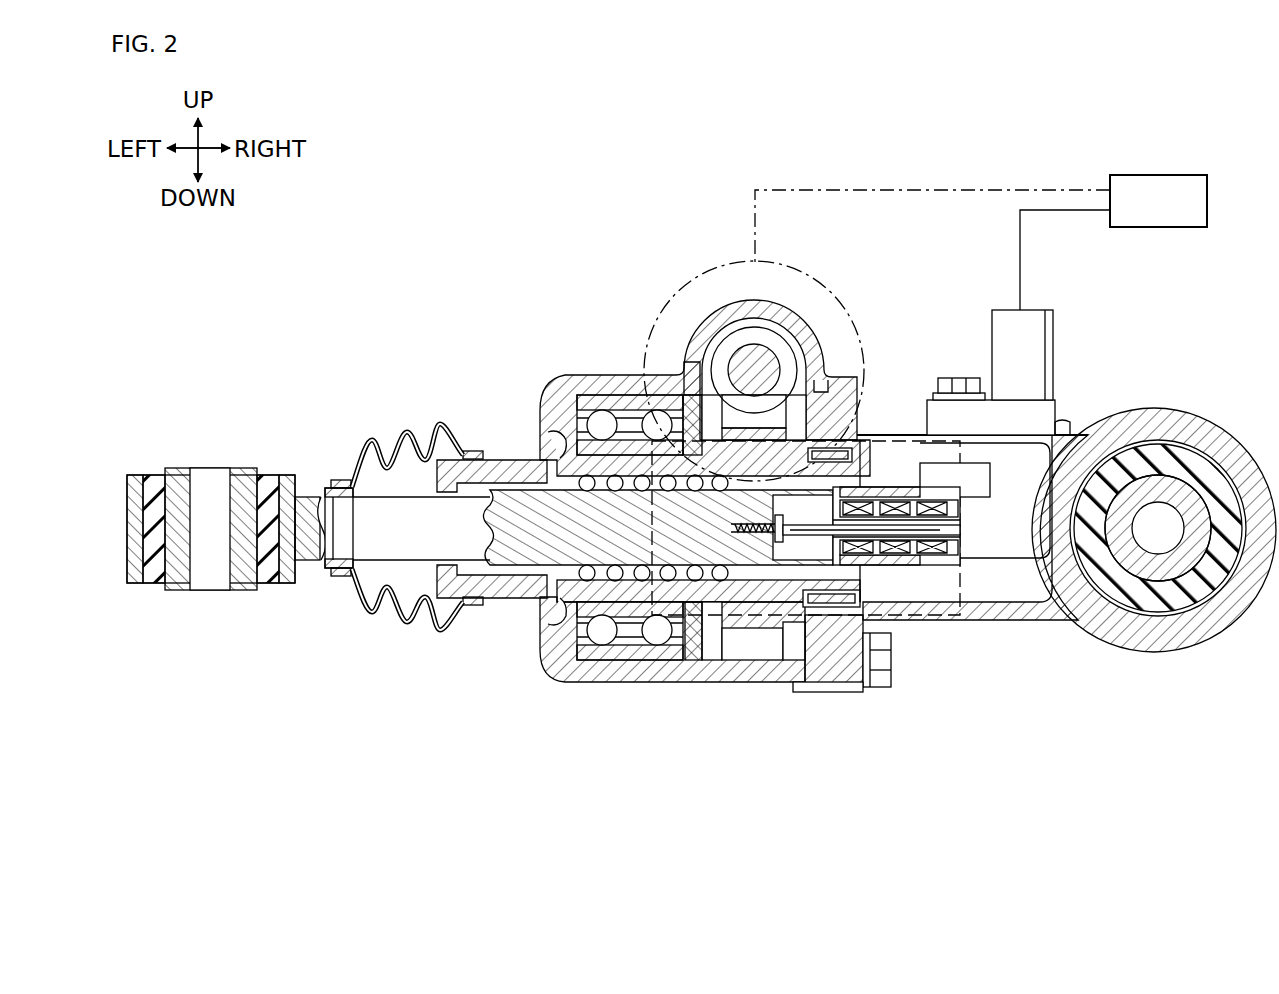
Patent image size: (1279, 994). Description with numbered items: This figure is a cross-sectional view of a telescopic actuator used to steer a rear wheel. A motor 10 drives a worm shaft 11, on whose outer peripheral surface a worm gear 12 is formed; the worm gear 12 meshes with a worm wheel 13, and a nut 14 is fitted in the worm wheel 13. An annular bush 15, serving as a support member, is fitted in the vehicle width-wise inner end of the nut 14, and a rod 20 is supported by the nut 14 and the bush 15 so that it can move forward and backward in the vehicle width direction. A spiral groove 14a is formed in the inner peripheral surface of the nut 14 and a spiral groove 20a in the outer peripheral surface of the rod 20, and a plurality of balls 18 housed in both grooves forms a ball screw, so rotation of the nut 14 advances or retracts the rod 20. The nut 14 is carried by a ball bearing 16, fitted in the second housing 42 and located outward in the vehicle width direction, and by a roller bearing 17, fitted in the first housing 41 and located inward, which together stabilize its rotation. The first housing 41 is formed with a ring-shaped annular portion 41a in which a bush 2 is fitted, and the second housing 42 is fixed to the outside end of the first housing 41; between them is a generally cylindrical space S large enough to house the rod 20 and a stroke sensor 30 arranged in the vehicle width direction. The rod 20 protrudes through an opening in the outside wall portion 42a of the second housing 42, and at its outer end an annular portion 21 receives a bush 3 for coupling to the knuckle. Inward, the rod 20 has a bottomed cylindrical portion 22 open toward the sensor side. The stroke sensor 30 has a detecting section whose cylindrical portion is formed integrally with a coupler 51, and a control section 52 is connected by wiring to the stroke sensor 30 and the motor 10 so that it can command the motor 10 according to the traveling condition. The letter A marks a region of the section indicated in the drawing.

The bush 2 is at (1196, 432).
The bush 3 is at (252, 464).
The motor 10 is at (704, 268).
The worm shaft 11 is at (754, 371).
The worm gear 12 is at (784, 352).
The worm wheel 13 is at (755, 648).
The nut 14 is at (718, 682).
The spiral groove 14a is at (592, 400).
The annular bush (support member) 15 is at (932, 566).
The ball bearing 16 is at (590, 395).
The roller bearing 17 is at (836, 603).
The balls 18 is at (540, 617).
The rod 20 is at (604, 542).
The spiral groove 20a is at (515, 460).
The annular portion 21 is at (298, 568).
The bottomed cylindrical portion 22 is at (874, 470).
The stroke sensor 30 is at (993, 620).
The first housing 41 is at (1023, 612).
The annular portion 41a is at (1175, 630).
The second housing 42 is at (569, 682).
The outside wall portion 42a is at (442, 562).
The coupler 51 is at (1040, 352).
The control section 52 is at (1160, 175).
The region A is at (910, 640).
The space S is at (910, 468).